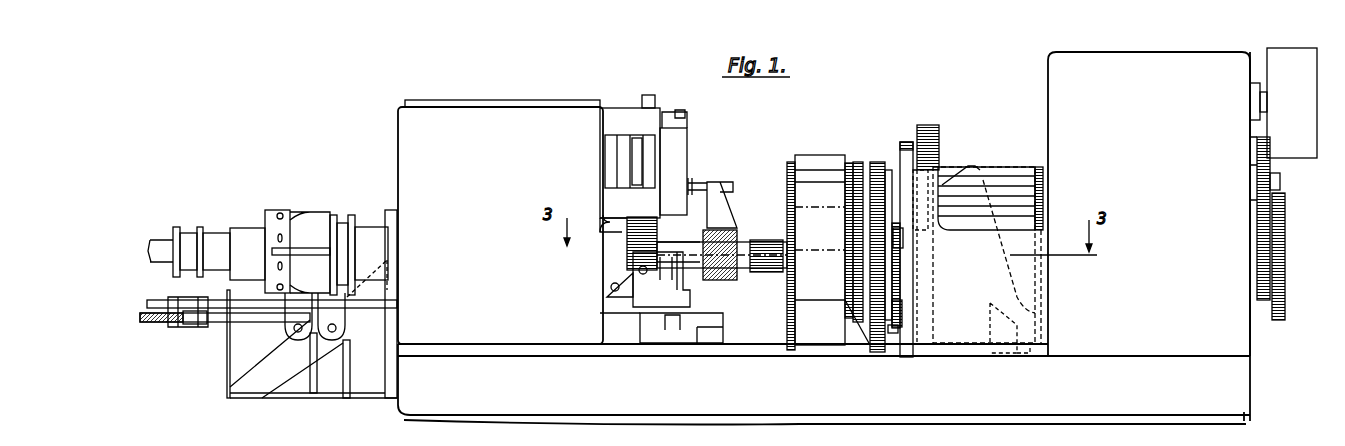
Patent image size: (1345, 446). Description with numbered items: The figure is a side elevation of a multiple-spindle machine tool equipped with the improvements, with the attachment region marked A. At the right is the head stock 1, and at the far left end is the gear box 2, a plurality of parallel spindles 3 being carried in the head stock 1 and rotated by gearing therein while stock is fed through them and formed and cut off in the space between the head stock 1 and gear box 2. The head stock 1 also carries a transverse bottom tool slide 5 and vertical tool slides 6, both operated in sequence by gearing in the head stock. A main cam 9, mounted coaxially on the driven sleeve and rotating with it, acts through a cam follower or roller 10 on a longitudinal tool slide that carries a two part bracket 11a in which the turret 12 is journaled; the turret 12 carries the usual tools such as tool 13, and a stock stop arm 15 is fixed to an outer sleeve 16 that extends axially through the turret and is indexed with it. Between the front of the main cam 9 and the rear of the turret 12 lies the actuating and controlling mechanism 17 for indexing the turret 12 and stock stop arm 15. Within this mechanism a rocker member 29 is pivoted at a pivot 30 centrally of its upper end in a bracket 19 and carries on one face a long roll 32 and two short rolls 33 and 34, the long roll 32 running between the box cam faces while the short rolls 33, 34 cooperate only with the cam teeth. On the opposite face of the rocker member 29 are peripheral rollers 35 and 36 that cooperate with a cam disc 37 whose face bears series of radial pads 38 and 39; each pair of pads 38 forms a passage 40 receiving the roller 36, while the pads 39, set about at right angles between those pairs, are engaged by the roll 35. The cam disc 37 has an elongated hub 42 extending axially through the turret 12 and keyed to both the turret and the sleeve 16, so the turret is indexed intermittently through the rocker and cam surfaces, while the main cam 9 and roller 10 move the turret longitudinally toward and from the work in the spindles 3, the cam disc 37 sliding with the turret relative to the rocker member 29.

The head stock 1 is at (582, 105).
The gear box 2 is at (1050, 90).
The spindles 3 is at (628, 243).
The transverse bottom tool slide 5 is at (652, 343).
The vertical tool slides 6 is at (683, 162).
The main cam 9 is at (1003, 168).
The cam follower or roller 10 is at (1020, 353).
The two part bracket 11a is at (803, 305).
The turret 12 is at (790, 214).
The tool 13 is at (736, 252).
The stock stop arm 15 is at (718, 214).
The outer sleeve 16 is at (762, 246).
The actuating and controlling mechanism 17 is at (866, 153).
The bracket 19 is at (940, 138).
The rocker member 29 is at (904, 134).
The pivot 30 is at (898, 172).
The long roll 32 is at (930, 232).
The short roll 33 is at (905, 232).
The short roll 34 is at (944, 163).
The roller 35 is at (900, 252).
The roller 36 is at (903, 313).
The cam disc 37 is at (878, 352).
The radial pads 38 is at (897, 347).
The radial pads 39 is at (852, 207).
The passage 40 is at (892, 330).
The elongated hub 42 is at (862, 248).
The attachment A is at (334, 206).